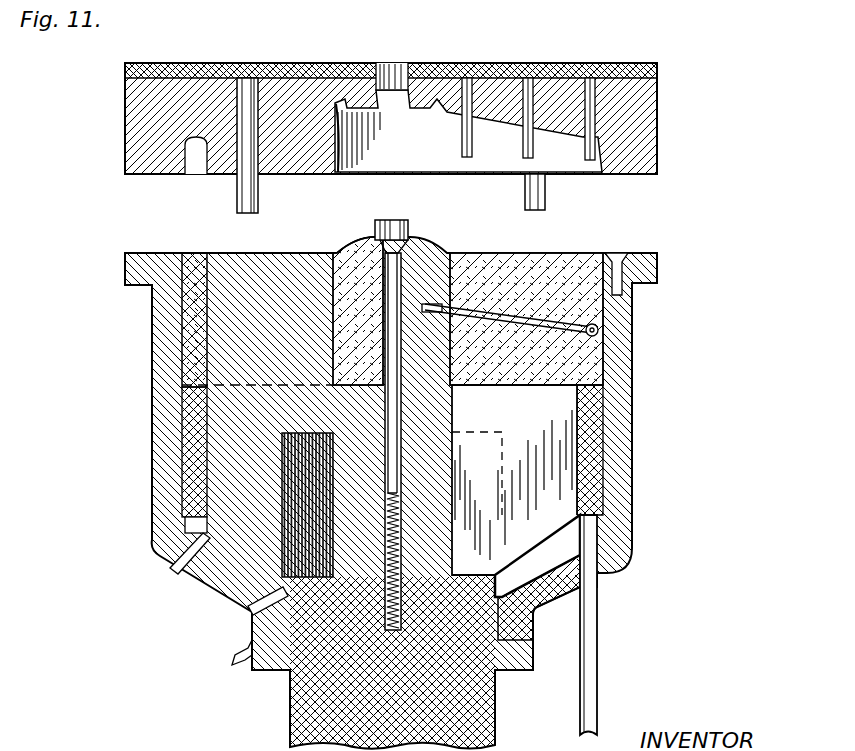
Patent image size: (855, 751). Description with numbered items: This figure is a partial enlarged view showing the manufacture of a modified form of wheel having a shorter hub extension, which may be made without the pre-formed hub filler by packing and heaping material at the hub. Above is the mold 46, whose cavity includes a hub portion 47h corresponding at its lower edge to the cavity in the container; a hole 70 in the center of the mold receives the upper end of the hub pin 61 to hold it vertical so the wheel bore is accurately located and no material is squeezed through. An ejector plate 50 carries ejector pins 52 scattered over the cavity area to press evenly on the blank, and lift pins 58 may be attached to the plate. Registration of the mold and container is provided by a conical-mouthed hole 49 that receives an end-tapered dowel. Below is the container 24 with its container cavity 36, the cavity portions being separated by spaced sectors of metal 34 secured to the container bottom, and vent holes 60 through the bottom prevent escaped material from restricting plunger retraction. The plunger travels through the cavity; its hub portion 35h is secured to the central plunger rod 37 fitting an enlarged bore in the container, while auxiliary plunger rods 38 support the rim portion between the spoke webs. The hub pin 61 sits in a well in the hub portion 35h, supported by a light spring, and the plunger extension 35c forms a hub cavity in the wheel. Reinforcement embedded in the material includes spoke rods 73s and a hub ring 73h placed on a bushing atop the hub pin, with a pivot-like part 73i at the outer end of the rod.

The container 24 is at (158, 415).
The spaced sectors of metal 34 is at (232, 437).
The container cavity 36 is at (197, 335).
The central plunger rod 37 is at (312, 705).
The auxiliary plunger rods 38 is at (592, 673).
The mold 46 is at (655, 138).
The hub portion of mold cavity 47h is at (348, 174).
The conical-mouthed hole 49 is at (619, 252).
The ejector plate 50 is at (660, 64).
The ejector pins 52 is at (523, 158).
The lift pins 58 is at (237, 200).
The vent holes 60 is at (212, 613).
The hub pin 61 is at (402, 460).
The hole 70 is at (390, 67).
The hub ring 73h is at (432, 304).
The pivot 73i is at (598, 330).
The spoke rods 73s is at (515, 262).
The plunger extension 35c is at (463, 380).
The hub portion of plunger 35h is at (430, 507).